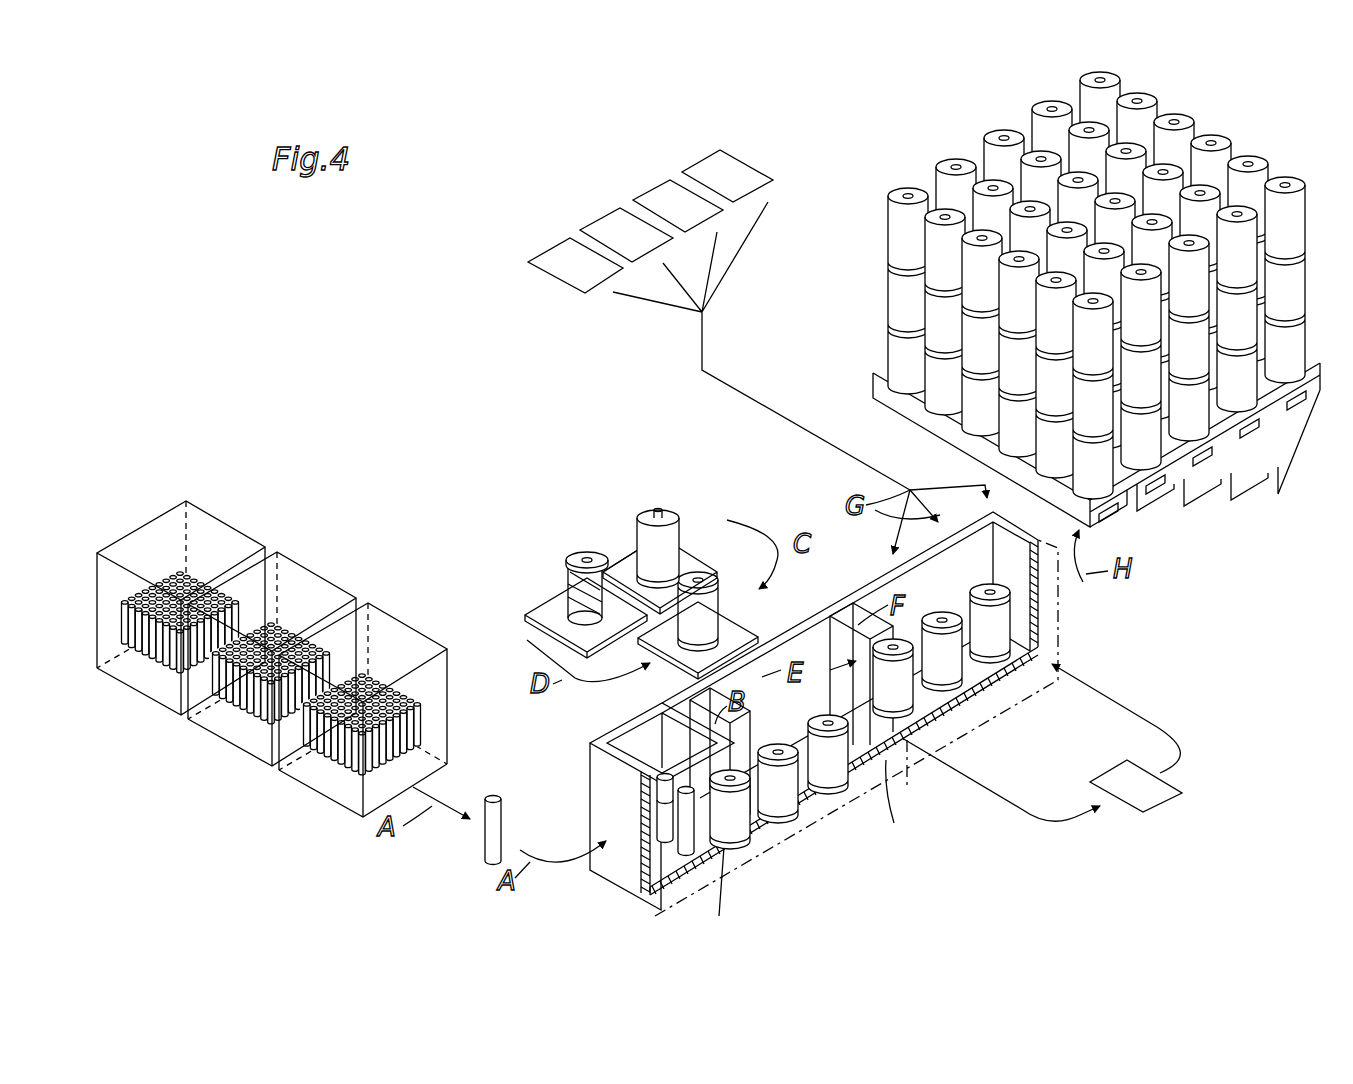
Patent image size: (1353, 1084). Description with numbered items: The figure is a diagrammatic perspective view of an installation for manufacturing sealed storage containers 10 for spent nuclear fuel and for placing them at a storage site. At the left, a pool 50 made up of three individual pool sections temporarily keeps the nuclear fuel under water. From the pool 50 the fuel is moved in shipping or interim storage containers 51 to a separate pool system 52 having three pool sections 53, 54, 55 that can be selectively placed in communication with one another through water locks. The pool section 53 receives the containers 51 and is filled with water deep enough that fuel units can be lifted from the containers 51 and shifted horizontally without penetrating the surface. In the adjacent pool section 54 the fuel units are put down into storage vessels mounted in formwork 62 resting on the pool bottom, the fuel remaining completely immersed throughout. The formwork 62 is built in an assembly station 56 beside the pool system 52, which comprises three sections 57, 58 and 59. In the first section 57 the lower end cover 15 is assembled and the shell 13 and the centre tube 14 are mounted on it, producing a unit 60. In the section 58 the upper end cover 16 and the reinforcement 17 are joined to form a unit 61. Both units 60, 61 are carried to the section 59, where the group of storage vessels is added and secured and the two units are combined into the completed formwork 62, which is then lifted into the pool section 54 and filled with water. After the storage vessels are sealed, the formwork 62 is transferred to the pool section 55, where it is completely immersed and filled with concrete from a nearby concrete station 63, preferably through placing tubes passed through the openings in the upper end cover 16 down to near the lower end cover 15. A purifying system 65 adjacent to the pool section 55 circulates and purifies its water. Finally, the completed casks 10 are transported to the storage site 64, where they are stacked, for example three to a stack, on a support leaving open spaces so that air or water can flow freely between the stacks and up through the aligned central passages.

The storage container 10 is at (903, 233).
The shell 13 is at (656, 532).
The centre tube 14 is at (645, 516).
The lower end cover 15 is at (600, 512).
The upper end cover 16 is at (575, 552).
The reinforcement 17 is at (553, 593).
The pool 50 is at (330, 567).
The shipping or interim storage container 51 is at (499, 812).
The pool system 52 is at (758, 889).
The pool section 53 is at (590, 742).
The pool section 54 is at (807, 619).
The pool section 55 is at (870, 592).
The assembly station 56 is at (658, 549).
The first section 57 is at (692, 562).
The section 58 is at (540, 616).
The section 59 is at (690, 667).
The unit 60 is at (680, 532).
The unit 61 is at (572, 600).
The formwork 62 is at (724, 606).
The concrete station 63 is at (590, 304).
The storage site 64 is at (958, 137).
The purifying system 65 is at (1143, 800).